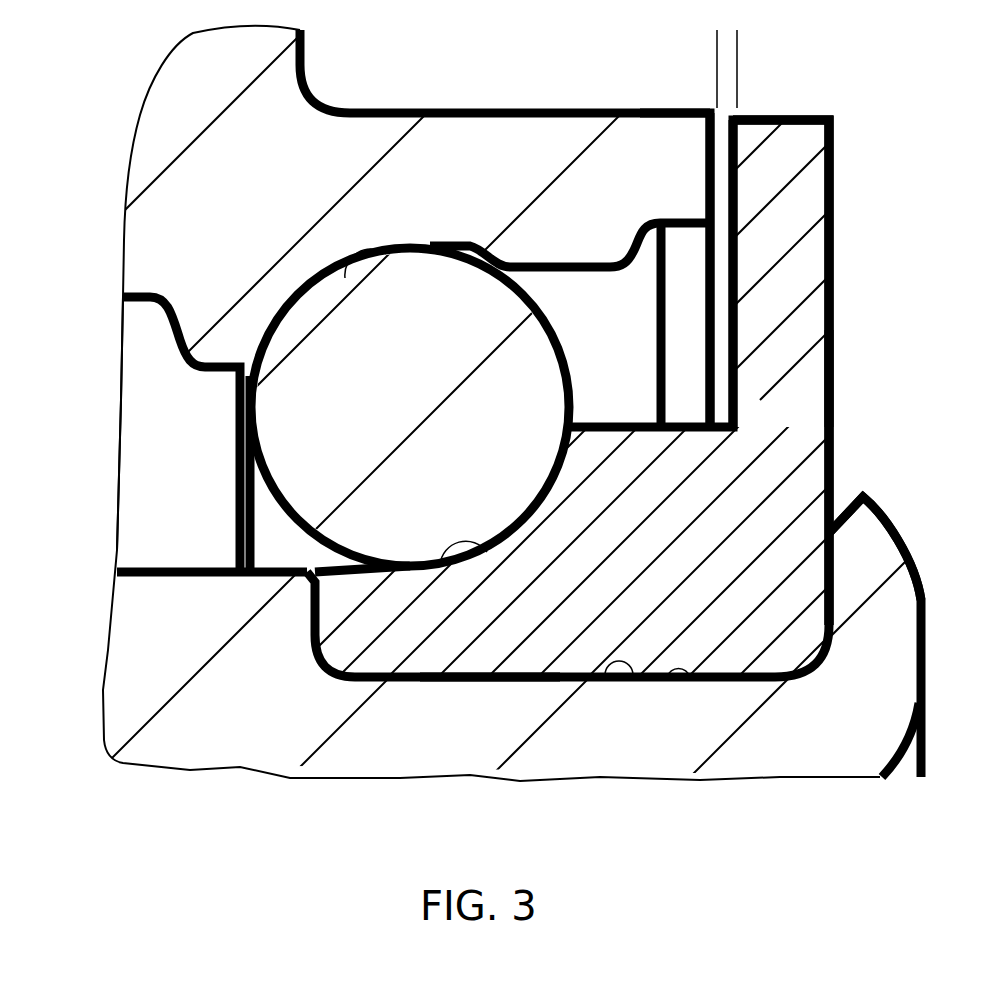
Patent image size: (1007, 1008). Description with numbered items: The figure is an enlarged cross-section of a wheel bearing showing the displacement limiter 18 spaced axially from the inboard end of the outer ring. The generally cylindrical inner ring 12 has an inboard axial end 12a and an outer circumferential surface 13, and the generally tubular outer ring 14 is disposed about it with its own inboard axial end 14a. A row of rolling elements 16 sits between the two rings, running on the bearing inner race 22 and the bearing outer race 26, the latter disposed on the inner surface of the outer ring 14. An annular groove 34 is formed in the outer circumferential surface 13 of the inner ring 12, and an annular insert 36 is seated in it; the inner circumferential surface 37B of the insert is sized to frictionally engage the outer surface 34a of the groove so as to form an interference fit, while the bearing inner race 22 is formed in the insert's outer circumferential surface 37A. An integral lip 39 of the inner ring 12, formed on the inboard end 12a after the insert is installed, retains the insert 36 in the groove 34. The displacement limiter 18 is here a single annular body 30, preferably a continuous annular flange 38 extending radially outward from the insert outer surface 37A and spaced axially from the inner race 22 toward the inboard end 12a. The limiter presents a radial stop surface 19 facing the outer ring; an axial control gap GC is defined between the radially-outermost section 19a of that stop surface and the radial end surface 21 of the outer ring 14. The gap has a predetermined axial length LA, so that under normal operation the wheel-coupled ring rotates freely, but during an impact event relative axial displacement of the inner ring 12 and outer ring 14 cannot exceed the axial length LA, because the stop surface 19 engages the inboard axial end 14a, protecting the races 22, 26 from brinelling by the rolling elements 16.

The inner ring 12 is at (810, 818).
The inboard axial end 12a is at (893, 730).
The outer circumferential surface 13 is at (205, 557).
The outer ring 14 is at (418, 55).
The inboard axial end 14a is at (671, 123).
The rolling elements 16 is at (300, 322).
The displacement limiter 18 is at (862, 268).
The radial stop surface 19 is at (720, 273).
The radially-outermost section 19a is at (708, 182).
The radial end surface 21 is at (715, 202).
The bearing inner race 22 is at (447, 545).
The bearing outer race 26 is at (385, 252).
The annular body 30 is at (829, 322).
The annular groove 34 is at (605, 678).
The outer surface of the groove 34a is at (683, 678).
The annular insert 36 is at (832, 473).
The outer circumferential surface 37A is at (622, 425).
The inner circumferential surface 37B is at (490, 680).
The annular flange 38 is at (815, 368).
The integral lip 39 is at (886, 553).
The axial control gap GC is at (723, 165).
The axial length LA is at (657, 47).